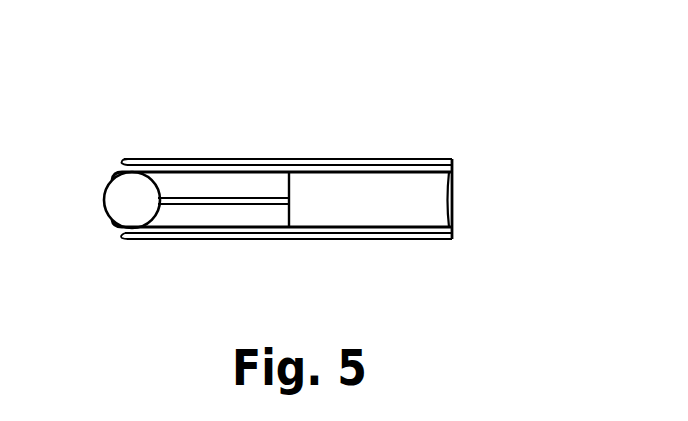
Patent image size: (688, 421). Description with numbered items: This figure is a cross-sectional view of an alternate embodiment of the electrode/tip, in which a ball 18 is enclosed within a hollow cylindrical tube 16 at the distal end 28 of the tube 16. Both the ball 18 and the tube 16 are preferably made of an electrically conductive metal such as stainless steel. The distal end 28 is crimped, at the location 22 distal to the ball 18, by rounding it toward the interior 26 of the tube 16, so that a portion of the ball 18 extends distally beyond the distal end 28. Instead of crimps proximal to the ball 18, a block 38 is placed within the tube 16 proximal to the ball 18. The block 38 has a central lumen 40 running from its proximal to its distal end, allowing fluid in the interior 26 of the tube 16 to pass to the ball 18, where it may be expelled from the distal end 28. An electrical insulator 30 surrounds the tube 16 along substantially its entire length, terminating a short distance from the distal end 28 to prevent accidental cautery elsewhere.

The tube 16 is at (298, 248).
The ball 18 is at (112, 196).
The distal crimp 22 is at (112, 254).
The interior of tube 26 is at (364, 186).
The distal end of tube 28 is at (118, 166).
The electrical insulator 30 is at (343, 249).
The block 38 is at (180, 186).
The central lumen 40 is at (228, 198).